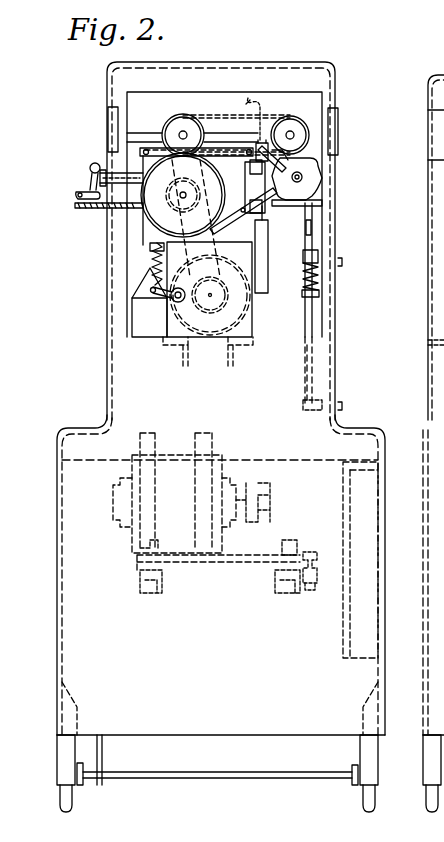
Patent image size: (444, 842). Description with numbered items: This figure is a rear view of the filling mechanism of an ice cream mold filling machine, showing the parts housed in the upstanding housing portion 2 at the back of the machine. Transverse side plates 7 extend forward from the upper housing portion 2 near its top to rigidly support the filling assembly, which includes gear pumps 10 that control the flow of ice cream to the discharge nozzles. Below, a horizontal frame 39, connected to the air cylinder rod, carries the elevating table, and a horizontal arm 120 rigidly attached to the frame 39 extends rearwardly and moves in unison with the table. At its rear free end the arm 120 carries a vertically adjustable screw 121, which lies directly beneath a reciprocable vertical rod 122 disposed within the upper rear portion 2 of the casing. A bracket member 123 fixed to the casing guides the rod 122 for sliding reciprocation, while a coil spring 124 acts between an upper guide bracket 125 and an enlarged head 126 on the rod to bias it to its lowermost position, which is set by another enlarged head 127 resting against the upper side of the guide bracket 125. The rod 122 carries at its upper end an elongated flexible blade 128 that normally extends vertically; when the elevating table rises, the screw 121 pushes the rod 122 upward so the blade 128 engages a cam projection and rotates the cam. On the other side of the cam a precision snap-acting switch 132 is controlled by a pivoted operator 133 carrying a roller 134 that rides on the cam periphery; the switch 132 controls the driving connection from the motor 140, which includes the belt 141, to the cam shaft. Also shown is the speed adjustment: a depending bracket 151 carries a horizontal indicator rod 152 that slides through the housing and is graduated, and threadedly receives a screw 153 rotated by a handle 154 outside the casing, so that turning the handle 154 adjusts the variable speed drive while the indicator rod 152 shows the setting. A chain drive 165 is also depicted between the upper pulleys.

The upstanding housing portion 2 is at (415, 212).
The transverse side plates 7 is at (107, 130).
The gear pumps 10 is at (308, 383).
The horizontal frame 39 is at (242, 563).
The horizontal arm 120 is at (317, 586).
The vertically adjustable screw 121 is at (317, 552).
The reciprocable vertical rod 122 is at (309, 318).
The bracket member 123 is at (320, 407).
The coil spring 124 is at (315, 282).
The upper guide bracket 125 is at (318, 257).
The enlarged head 126 is at (315, 293).
The enlarged head 127 is at (313, 248).
The elongated flexible blade 128 is at (310, 196).
The precision snap-acting switch 132 is at (254, 170).
The pivoted operator 133 is at (262, 190).
The roller 134 is at (310, 150).
The motor 140 is at (163, 510).
The belt 141 is at (263, 400).
The depending bracket 151 is at (143, 162).
The horizontal indicator rod 152 is at (95, 210).
The screw 153 is at (140, 177).
The handle 154 is at (76, 192).
The chain drive 165 is at (312, 152).